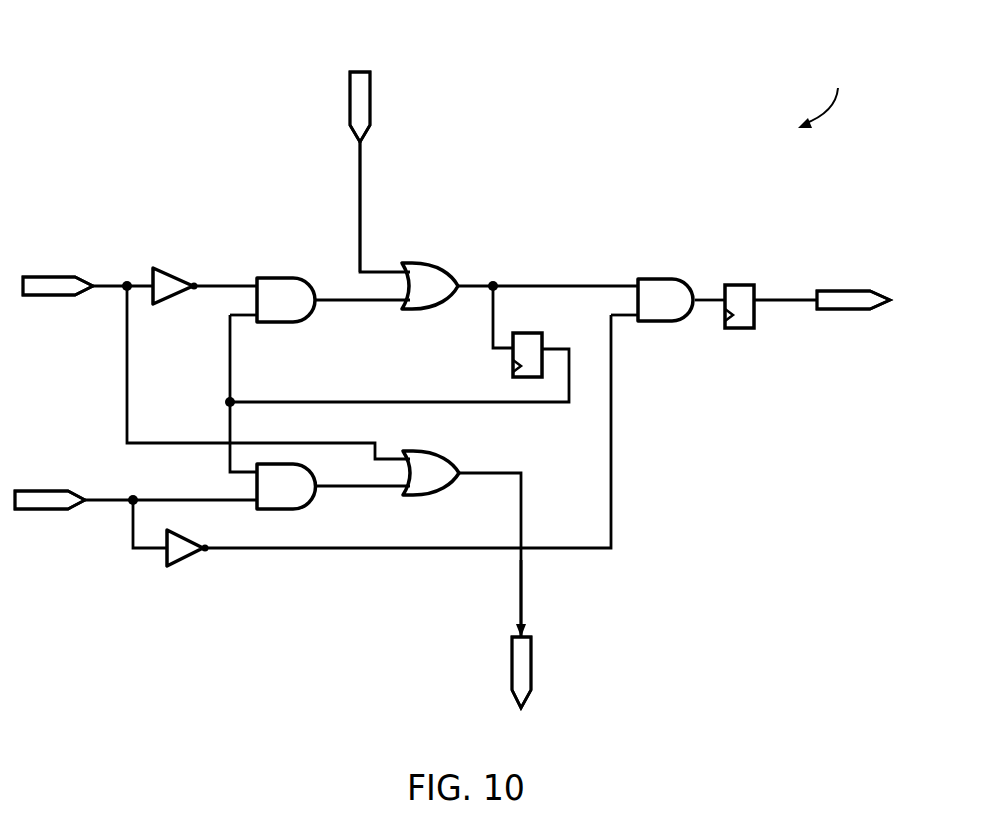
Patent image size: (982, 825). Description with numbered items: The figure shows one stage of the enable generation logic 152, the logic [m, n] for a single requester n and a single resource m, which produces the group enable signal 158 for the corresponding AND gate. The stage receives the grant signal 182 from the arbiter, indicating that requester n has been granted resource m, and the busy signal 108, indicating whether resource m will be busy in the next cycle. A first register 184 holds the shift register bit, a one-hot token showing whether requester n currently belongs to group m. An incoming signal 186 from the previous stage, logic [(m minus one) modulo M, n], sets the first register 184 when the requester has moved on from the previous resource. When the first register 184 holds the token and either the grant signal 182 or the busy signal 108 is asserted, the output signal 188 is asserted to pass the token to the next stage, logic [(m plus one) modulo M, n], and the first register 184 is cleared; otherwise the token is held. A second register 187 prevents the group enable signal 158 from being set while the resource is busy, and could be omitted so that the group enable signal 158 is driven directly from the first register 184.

The enable generation logic 152 is at (128, 80).
The grant signal 182 is at (110, 289).
The busy signal 108 is at (108, 503).
The signal from previous stage 186 is at (358, 222).
The first register 184 is at (527, 340).
The second register 187 is at (737, 292).
The group enable signal 158 is at (783, 303).
The output signal to next stage 188 is at (521, 575).